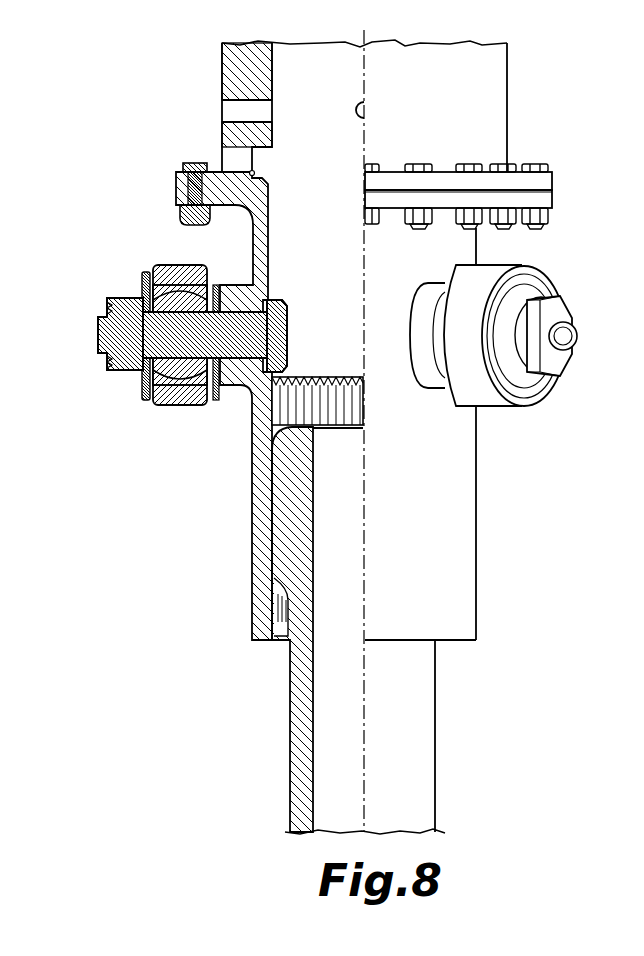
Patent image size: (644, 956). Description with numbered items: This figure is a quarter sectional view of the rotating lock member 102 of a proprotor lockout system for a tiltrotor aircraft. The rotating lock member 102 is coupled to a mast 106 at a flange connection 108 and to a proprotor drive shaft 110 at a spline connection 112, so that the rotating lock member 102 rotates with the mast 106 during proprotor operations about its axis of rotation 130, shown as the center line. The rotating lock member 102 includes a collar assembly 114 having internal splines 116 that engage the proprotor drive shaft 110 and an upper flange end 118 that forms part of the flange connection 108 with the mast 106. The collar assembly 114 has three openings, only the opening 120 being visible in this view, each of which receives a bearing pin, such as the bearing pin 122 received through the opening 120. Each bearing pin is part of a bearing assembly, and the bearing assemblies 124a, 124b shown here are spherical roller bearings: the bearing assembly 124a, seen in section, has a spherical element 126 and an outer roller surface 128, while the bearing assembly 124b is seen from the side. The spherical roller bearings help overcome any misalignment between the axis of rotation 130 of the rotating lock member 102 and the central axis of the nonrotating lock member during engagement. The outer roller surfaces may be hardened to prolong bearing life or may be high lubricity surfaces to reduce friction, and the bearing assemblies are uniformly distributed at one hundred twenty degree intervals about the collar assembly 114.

The rotating lock member 102 is at (462, 580).
The mast 106 is at (498, 74).
The flange connection 108 is at (555, 183).
The proprotor drive shaft 110 is at (294, 793).
The spline connection 112 is at (256, 530).
The collar assembly 114 is at (457, 453).
The internal splines 116 is at (290, 430).
The upper flange end 118 is at (554, 199).
The opening 120 is at (248, 378).
The bearing pin 122 is at (164, 404).
The bearing assembly 124a is at (158, 268).
The bearing assembly 124b is at (488, 400).
The spherical element 126 is at (146, 292).
The outer roller surface 128 is at (185, 270).
The axis of rotation 130 is at (366, 68).